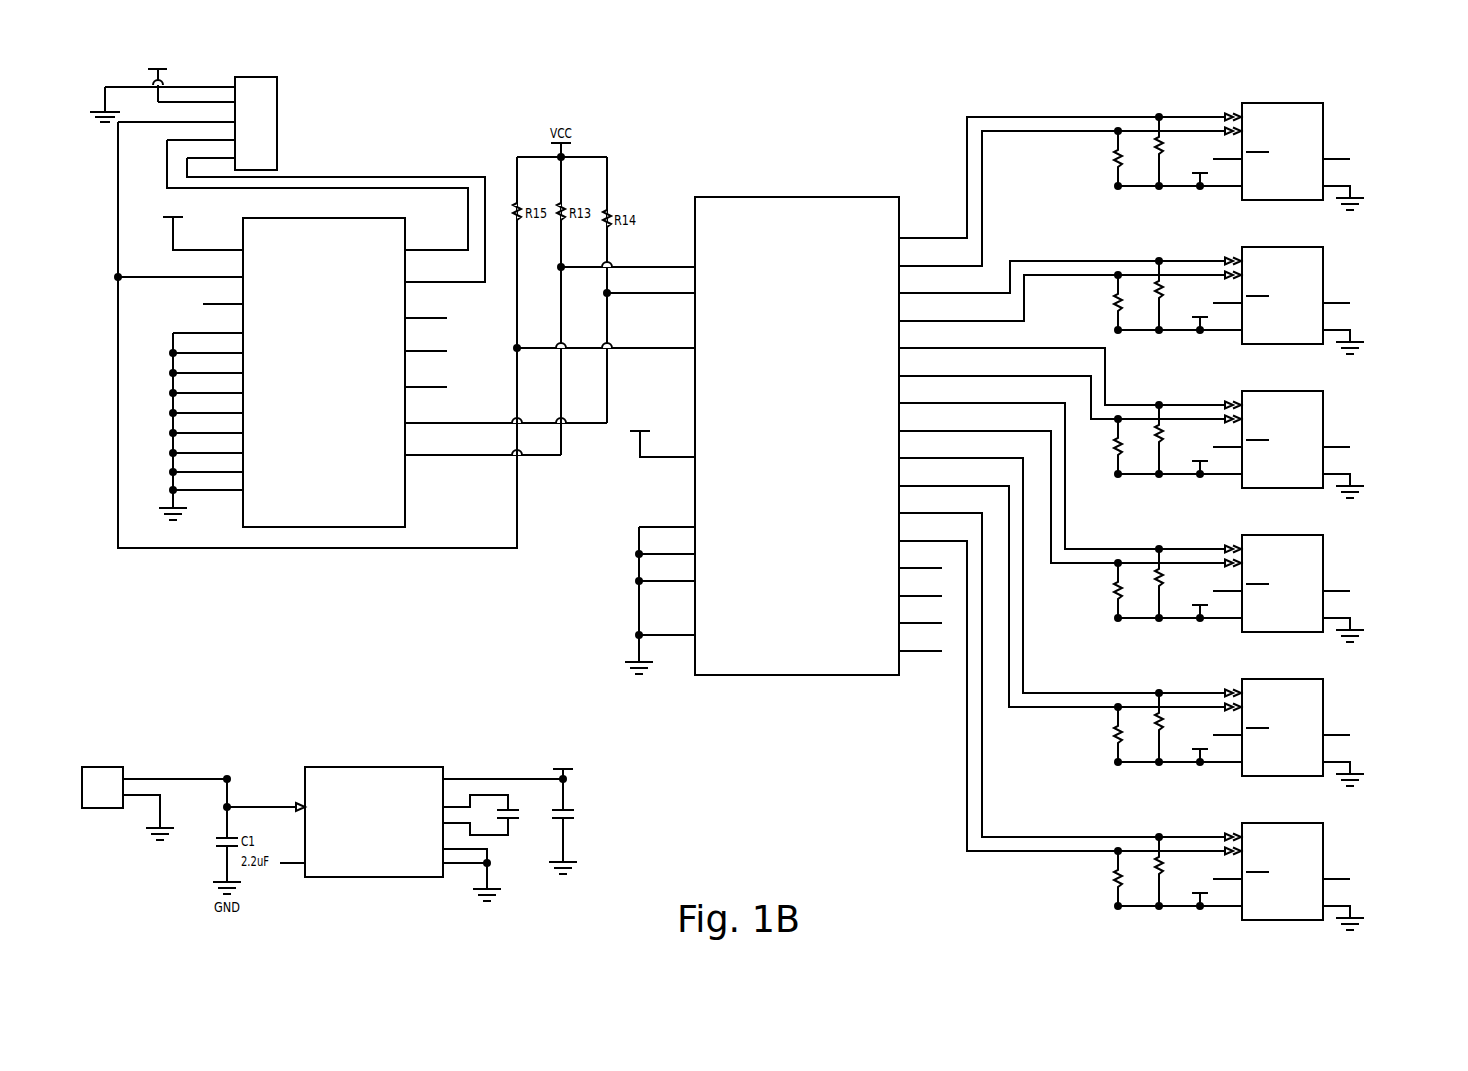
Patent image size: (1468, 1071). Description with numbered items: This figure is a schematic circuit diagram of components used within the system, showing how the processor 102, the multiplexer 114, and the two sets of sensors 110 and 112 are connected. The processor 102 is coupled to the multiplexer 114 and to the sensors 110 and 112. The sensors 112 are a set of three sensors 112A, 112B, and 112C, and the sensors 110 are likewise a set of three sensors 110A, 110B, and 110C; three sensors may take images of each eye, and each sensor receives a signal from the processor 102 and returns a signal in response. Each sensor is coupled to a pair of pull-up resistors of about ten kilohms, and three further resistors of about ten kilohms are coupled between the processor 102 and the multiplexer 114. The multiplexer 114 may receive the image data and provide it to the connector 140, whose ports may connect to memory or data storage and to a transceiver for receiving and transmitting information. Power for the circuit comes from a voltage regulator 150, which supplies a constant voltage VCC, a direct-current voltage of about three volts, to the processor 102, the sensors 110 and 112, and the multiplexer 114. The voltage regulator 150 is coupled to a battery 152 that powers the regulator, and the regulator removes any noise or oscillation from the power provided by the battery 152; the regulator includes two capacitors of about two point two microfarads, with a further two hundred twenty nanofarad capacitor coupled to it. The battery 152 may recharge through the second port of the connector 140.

The processor 102 is at (797, 197).
The multiplexer 114 is at (377, 527).
The connector 140 is at (277, 127).
The sensors 112 is at (1375, 95).
The sensor 112A is at (1239, 148).
The sensor 112B is at (1239, 292).
The sensor 112C is at (1239, 436).
The sensors 110 is at (1375, 530).
The sensor 110A is at (1239, 580).
The sensor 110B is at (1239, 724).
The sensor 110C is at (1239, 868).
The voltage regulator 150 is at (388, 767).
The battery 152 is at (110, 767).